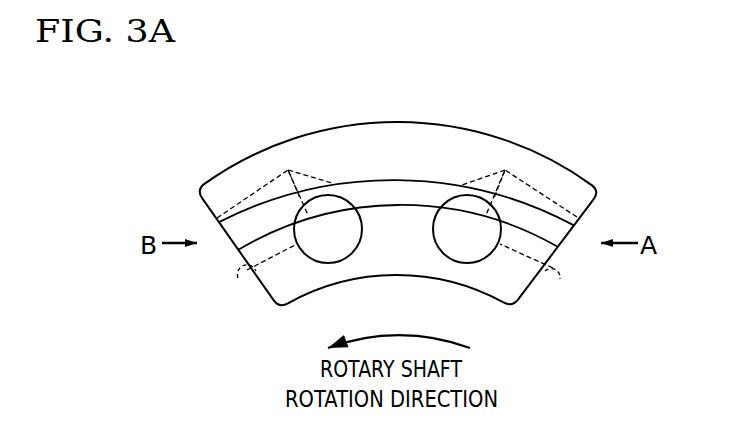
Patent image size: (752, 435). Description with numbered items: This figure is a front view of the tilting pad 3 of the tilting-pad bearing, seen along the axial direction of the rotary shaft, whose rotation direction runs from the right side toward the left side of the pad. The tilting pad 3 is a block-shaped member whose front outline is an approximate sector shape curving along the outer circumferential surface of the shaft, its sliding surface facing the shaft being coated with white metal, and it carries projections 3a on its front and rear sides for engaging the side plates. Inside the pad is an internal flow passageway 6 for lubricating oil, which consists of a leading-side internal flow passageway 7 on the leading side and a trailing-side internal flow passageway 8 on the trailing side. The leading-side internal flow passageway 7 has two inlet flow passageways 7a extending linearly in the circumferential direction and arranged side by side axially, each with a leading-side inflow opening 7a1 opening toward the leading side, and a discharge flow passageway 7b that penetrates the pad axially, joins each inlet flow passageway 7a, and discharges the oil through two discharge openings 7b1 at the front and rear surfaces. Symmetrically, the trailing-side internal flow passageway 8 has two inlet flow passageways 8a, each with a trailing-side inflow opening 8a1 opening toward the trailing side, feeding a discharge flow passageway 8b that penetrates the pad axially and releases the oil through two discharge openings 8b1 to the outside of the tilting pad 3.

The tilting pad 3 is at (551, 126).
The projections 3a is at (392, 188).
The internal flow passageway 6 is at (357, 280).
The leading-side internal flow passageway 7 is at (548, 194).
The inlet flow passageway 7a is at (553, 268).
The leading-side inflow opening 7a1 is at (555, 268).
The discharge flow passageway 7b is at (484, 218).
The discharge openings 7b1 is at (470, 206).
The trailing-side internal flow passageway 8 is at (250, 194).
The inlet flow passageway 8a is at (247, 270).
The trailing-side inflow opening 8a1 is at (240, 270).
The discharge flow passageway 8b is at (310, 216).
The discharge openings 8b1 is at (325, 210).